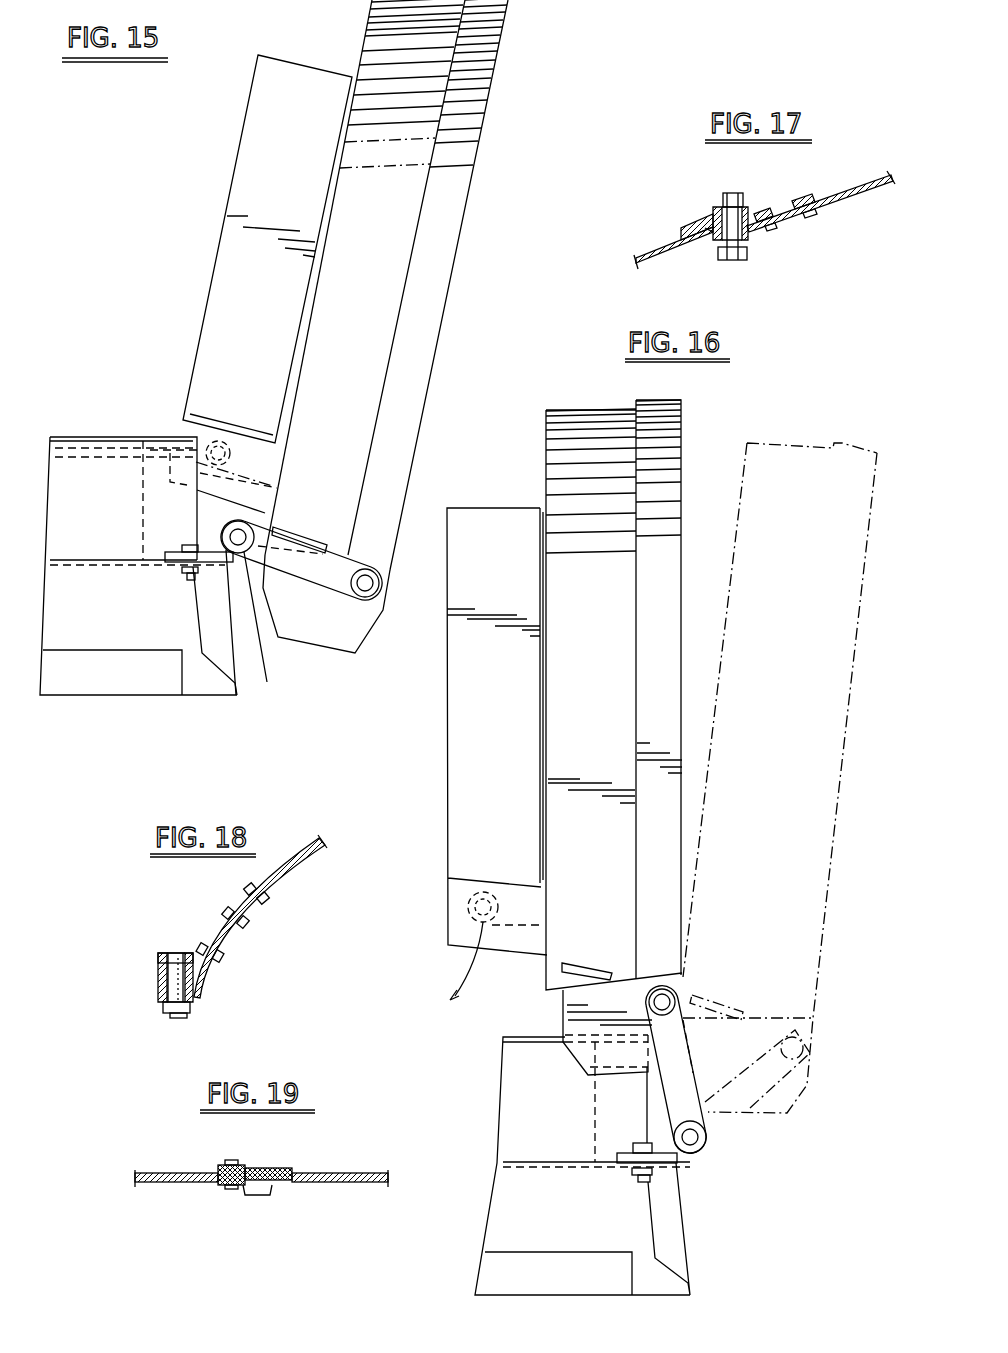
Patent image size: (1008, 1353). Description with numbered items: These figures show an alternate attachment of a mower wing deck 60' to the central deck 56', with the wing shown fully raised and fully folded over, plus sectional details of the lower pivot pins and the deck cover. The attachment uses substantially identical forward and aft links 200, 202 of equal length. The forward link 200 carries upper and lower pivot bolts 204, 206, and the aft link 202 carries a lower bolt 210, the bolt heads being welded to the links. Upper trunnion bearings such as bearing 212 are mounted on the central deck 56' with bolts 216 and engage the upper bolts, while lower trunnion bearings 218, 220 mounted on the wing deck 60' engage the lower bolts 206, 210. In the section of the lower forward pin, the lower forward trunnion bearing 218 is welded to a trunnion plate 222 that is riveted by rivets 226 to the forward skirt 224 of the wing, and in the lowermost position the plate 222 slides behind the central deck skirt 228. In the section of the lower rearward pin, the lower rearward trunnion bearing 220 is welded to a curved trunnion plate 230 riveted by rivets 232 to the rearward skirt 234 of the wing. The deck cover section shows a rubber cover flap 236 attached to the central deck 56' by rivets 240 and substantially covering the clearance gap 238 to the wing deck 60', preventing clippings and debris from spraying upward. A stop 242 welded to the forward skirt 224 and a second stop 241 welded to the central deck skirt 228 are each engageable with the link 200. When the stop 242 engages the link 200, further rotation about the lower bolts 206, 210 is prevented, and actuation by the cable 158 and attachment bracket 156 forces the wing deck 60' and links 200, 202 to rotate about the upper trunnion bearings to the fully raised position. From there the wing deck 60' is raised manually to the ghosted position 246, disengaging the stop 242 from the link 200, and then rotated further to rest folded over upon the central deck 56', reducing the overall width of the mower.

In FIG. 15, the central deck portion 56' is at (138, 566).
In FIG. 16, the central deck portion 56' is at (564, 1166).
In FIG. 19, the central deck portion 56' is at (176, 1204).
In FIG. 15, the wing deck 60' is at (365, 277).
In FIG. 16, the wing deck 60' is at (585, 695).
In FIG. 19, the wing deck 60' is at (342, 1199).
In FIG. 15, the attachment bracket 156 is at (257, 437).
In FIG. 16, the attachment bracket 156 is at (506, 887).
In FIG. 15, the cable 158 is at (107, 452).
In FIG. 16, the cable 158 is at (462, 968).
In FIG. 15, the forward link 200 is at (320, 570).
In FIG. 16, the forward link 200 is at (692, 1106).
In FIG. 17, the forward link 200 is at (748, 243).
In FIG. 18, the aft link 202 is at (143, 970).
In FIG. 15, the upper pivot pin or bolt 204 is at (266, 683).
In FIG. 16, the upper pivot pin or bolt 204 is at (693, 1146).
In FIG. 15, the lower pivot pin or bolt 206 is at (372, 592).
In FIG. 16, the lower pivot pin or bolt 206 is at (683, 976).
In FIG. 17, the lower pivot pin or bolt 206 is at (733, 260).
In FIG. 18, the lower pivot pin or bolt 210 is at (177, 953).
In FIG. 15, the upper trunnion bearing 212 is at (227, 550).
In FIG. 15, the bolt 216 is at (182, 548).
In FIG. 16, the bolt 216 is at (640, 1143).
In FIG. 17, the lower forward trunnion bearing 218 is at (752, 215).
In FIG. 18, the lower rearward trunnion bearing 220 is at (160, 997).
In FIG. 15, the trunnion plate 222 is at (340, 643).
In FIG. 16, the trunnion plate 222 is at (583, 1052).
In FIG. 17, the trunnion plate 222 is at (688, 230).
In FIG. 15, the forward skirt 224 is at (447, 247).
In FIG. 16, the forward skirt 224 is at (670, 463).
In FIG. 17, the forward skirt 224 is at (853, 187).
In FIG. 17, the rivets 226 is at (807, 218).
In FIG. 15, the central deck skirt 228 is at (127, 685).
In FIG. 16, the central deck skirt 228 is at (490, 1270).
In FIG. 17, the central deck skirt 228 is at (658, 252).
In FIG. 18, the curved trunnion plate 230 is at (218, 930).
In FIG. 18, the rivets 232 is at (240, 925).
In FIG. 18, the rearward skirt 234 is at (302, 863).
In FIG. 19, the rubber cover flap 236 is at (273, 1170).
In FIG. 19, the clearance gap 238 is at (263, 1209).
In FIG. 19, the rivets 240 is at (230, 1150).
In FIG. 15, the second stop 241 is at (205, 612).
In FIG. 16, the second stop 241 is at (660, 1217).
In FIG. 17, the second stop 241 is at (695, 250).
In FIG. 15, the stop 242 is at (303, 533).
In FIG. 16, the stop 242 is at (590, 962).
In FIG. 16, the ghosted position of wing deck 246 is at (816, 997).